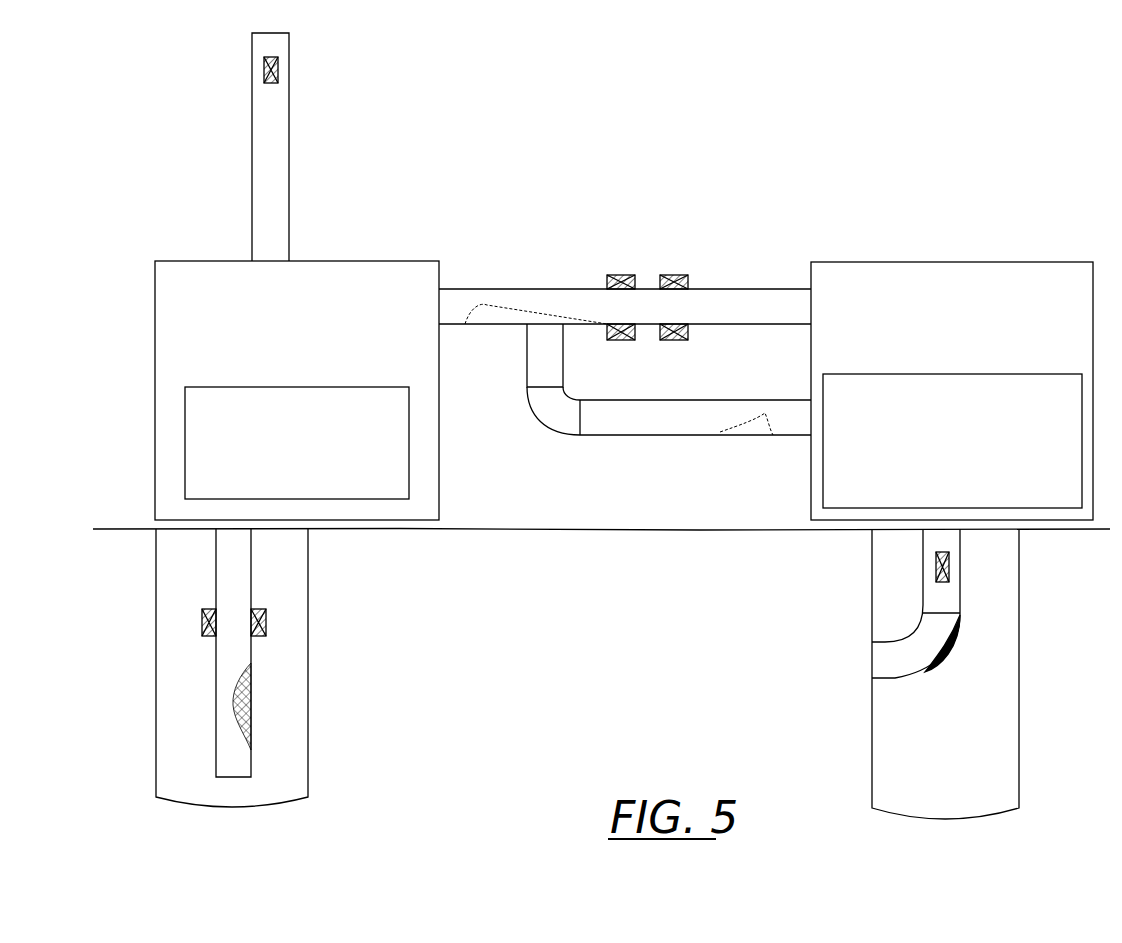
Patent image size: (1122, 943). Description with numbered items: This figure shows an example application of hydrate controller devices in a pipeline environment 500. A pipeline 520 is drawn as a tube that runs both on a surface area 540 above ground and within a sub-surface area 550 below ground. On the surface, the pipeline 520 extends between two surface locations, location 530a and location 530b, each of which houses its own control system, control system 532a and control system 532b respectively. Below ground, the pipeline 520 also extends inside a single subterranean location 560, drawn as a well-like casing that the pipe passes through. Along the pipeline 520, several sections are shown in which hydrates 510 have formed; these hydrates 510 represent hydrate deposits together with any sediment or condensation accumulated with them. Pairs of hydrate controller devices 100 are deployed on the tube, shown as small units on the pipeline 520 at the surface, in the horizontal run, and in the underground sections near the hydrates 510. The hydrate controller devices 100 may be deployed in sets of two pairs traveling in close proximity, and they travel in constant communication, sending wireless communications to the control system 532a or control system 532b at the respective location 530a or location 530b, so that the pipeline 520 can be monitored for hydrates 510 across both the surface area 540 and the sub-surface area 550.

The hydrate controller device 100 is at (278, 70).
The pipeline environment 500 is at (774, 130).
The hydrates 510 is at (500, 307).
The pipeline 520 is at (267, 165).
The location 530a is at (297, 390).
The location 530b is at (952, 391).
The control system 532a is at (297, 443).
The control system 532b is at (952, 441).
The surface area 540 is at (519, 481).
The sub-surface area 550 is at (592, 575).
The subterranean location 560 is at (308, 730).